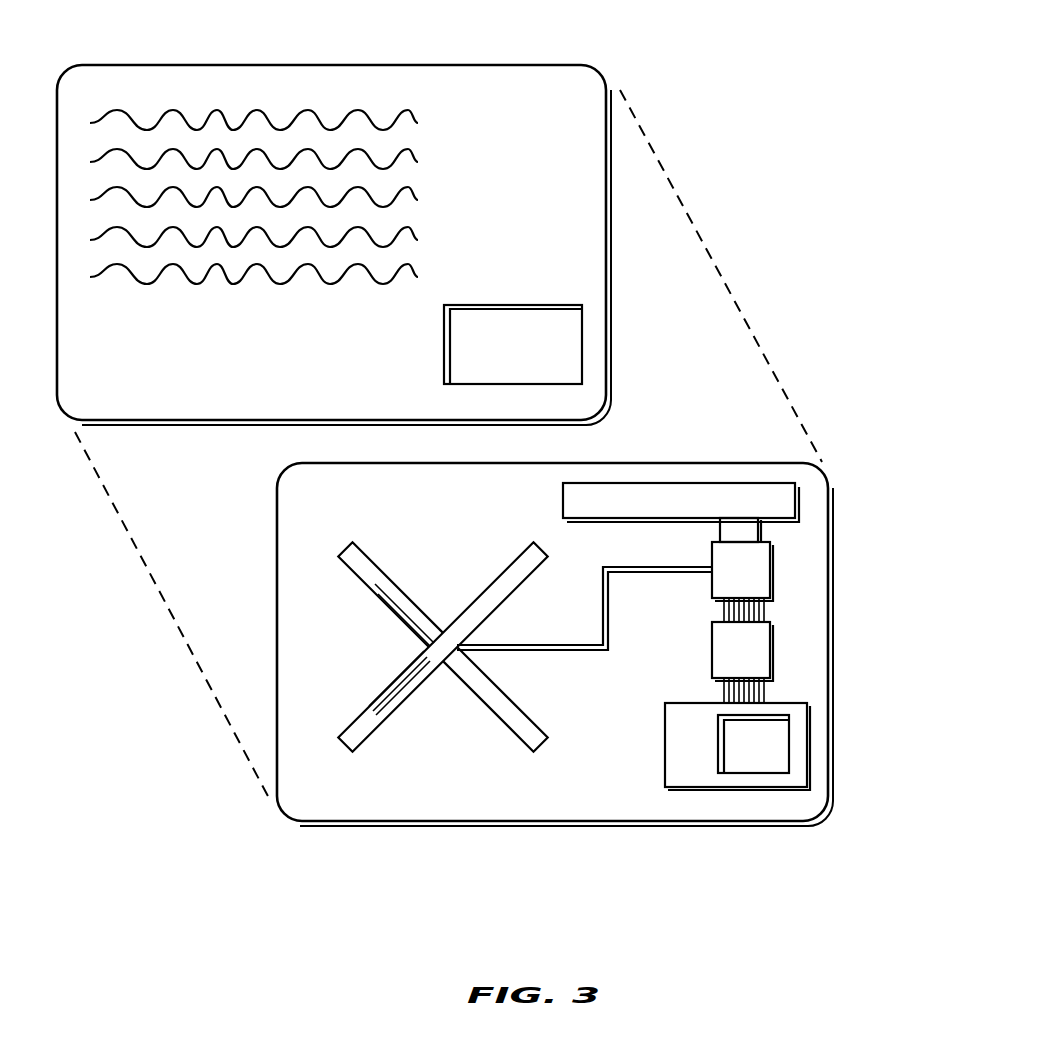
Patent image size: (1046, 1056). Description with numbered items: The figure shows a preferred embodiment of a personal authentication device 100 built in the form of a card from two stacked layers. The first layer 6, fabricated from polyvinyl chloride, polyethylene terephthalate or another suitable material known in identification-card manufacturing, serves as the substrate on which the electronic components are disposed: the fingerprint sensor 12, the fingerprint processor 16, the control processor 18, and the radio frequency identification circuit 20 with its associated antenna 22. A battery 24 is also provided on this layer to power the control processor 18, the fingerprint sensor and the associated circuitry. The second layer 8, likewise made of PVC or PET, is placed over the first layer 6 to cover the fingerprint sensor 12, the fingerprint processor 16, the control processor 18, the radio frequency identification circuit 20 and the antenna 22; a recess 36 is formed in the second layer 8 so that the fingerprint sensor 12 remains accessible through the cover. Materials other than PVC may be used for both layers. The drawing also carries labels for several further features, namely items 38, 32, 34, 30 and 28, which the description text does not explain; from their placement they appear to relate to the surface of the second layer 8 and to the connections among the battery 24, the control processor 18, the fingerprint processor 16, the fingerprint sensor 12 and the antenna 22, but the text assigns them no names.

The personal authentication device 100 is at (710, 110).
The second layer 8 is at (458, 78).
The display content lines 38 is at (217, 110).
The recess 36 is at (497, 346).
The first layer 6 is at (368, 825).
The radio frequency identification circuit 20 is at (450, 635).
The antenna 22 is at (412, 710).
The transmission line 32 is at (567, 652).
The battery 24 is at (780, 503).
The battery connector 34 is at (720, 530).
The control processor 18 is at (757, 572).
The connector pins 30 is at (718, 612).
The fingerprint processor 16 is at (757, 648).
The connector pins 28 is at (720, 692).
The fingerprint sensor 12 is at (685, 770).